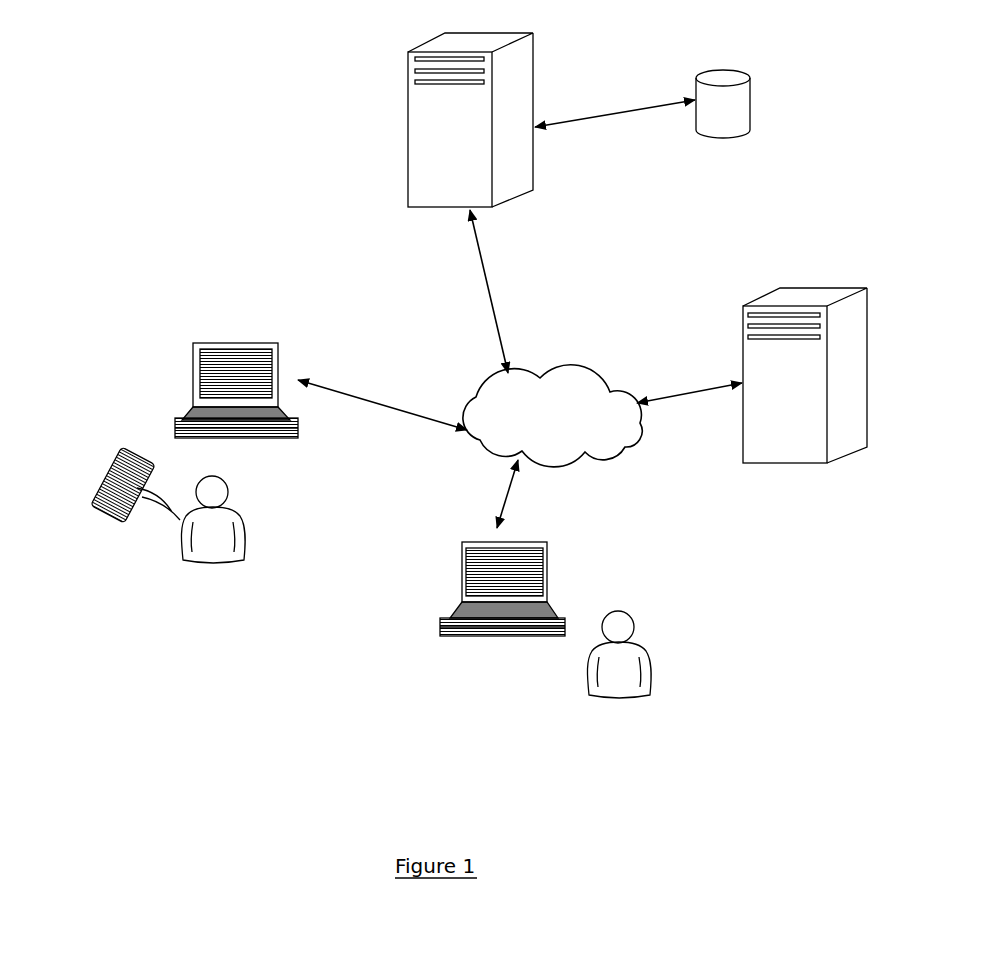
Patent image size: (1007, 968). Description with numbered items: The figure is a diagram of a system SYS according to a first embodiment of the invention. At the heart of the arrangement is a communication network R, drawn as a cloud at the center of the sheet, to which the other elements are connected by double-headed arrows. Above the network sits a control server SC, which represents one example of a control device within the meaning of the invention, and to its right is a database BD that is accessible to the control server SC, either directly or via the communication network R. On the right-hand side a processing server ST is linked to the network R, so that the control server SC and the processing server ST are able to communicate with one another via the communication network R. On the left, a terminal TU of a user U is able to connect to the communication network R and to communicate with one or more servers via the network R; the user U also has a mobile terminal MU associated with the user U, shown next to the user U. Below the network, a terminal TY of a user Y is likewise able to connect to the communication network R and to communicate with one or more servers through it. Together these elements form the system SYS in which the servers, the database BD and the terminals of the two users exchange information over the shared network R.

The system SYS is at (144, 126).
The control server SC is at (533, 48).
The database BD is at (730, 80).
The processing server ST is at (802, 288).
The communication network R is at (552, 416).
The terminal TU is at (193, 372).
The mobile terminal MU is at (102, 487).
The user U is at (238, 512).
The terminal TY is at (545, 567).
The user Y is at (643, 648).